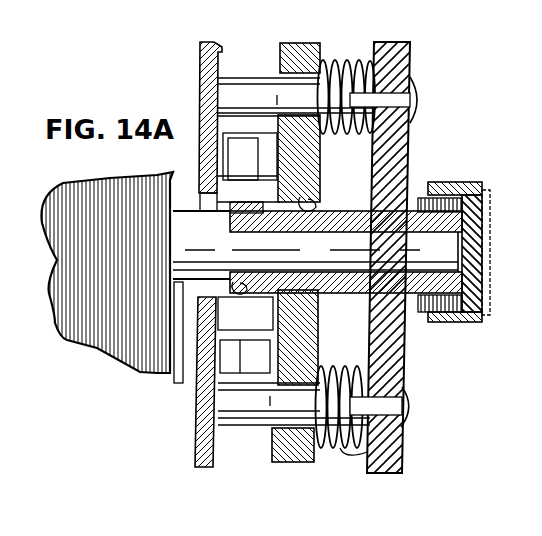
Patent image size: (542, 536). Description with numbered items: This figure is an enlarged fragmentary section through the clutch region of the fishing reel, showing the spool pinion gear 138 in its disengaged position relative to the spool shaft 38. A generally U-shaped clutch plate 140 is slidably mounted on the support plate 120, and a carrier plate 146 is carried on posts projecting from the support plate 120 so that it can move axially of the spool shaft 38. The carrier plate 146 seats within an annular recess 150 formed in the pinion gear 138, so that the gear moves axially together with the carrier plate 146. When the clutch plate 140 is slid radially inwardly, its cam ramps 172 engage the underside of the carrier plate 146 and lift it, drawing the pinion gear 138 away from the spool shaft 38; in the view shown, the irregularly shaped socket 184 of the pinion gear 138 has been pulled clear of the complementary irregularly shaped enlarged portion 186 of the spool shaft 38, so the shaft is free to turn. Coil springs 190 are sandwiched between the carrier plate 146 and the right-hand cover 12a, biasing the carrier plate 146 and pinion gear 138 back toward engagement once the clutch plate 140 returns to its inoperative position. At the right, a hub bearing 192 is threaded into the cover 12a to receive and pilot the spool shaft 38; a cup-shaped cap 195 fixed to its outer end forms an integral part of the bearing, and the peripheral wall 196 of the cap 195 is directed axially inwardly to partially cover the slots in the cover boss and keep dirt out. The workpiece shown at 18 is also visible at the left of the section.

The workpiece stock 18 is at (157, 347).
The support plate 120 is at (200, 52).
The enlarged portion of spool shaft 186 is at (186, 340).
The cam ramps 172 is at (270, 122).
The carrier plate 146 is at (322, 22).
The clutch plate 140 is at (233, 143).
The annular recess 150 is at (320, 200).
The spool pinion gear 138 is at (351, 287).
The coil springs 190 is at (343, 63).
The right-hand cover 12a is at (410, 150).
The spool shaft 38 is at (432, 322).
The irregularly shaped socket 184 is at (243, 293).
The hub bearing 192 is at (448, 183).
The peripheral wall 196 is at (457, 322).
The cup-shaped cap 195 is at (492, 222).